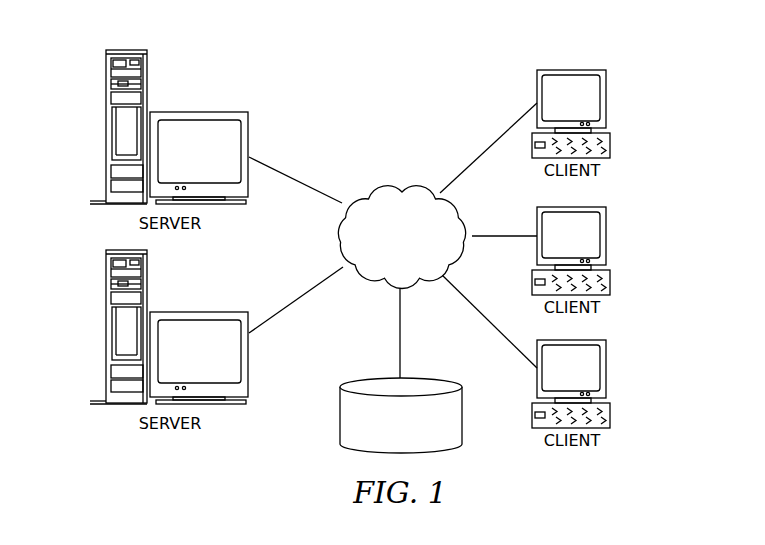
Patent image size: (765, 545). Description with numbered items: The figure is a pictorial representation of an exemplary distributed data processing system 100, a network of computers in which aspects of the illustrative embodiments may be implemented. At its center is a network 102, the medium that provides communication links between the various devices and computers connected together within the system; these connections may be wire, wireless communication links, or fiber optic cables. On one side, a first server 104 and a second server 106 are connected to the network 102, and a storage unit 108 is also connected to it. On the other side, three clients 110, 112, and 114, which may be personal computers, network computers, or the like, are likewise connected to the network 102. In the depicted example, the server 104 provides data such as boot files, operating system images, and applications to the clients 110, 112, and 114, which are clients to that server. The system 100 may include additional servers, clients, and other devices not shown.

The distributed data processing system 100 is at (455, 57).
The network 102 is at (373, 190).
The server 104 is at (106, 125).
The server 106 is at (106, 330).
The storage unit 108 is at (340, 418).
The client 110 is at (606, 100).
The client 112 is at (606, 237).
The client 114 is at (606, 370).